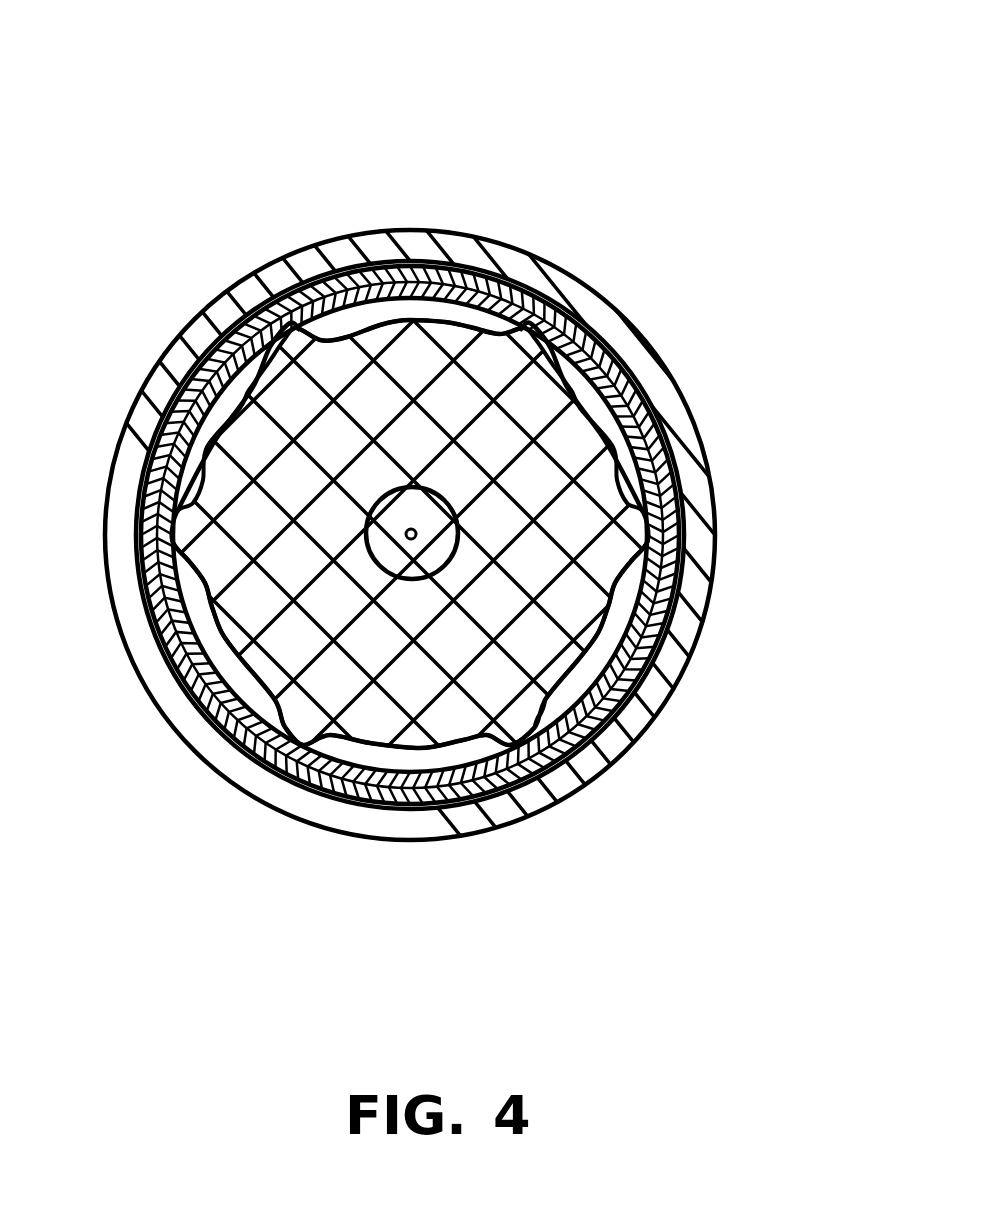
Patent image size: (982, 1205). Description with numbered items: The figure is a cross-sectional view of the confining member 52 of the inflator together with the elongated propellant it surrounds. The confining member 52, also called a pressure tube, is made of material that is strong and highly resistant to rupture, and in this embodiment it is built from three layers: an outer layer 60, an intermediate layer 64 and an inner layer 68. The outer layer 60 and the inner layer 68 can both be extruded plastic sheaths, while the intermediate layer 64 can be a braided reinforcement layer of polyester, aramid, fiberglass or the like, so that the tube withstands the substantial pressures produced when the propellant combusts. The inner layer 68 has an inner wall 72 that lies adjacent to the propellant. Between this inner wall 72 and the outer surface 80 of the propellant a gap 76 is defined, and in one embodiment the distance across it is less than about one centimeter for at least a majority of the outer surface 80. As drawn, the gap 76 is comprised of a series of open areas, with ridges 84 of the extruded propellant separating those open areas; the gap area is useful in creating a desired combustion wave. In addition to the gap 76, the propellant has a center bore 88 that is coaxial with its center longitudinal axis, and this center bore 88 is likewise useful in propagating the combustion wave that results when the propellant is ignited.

The confining member 52 is at (447, 190).
The outer layer 60 is at (560, 275).
The intermediate layer 64 is at (690, 567).
The inner layer 68 is at (650, 690).
The inner wall 72 is at (391, 762).
The gap 76 is at (600, 410).
The outer surface 80 is at (366, 330).
The ridges 84 is at (300, 730).
The center bore 88 is at (366, 536).